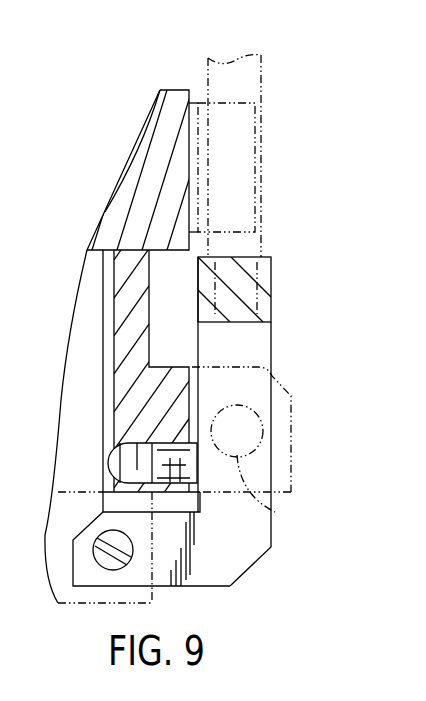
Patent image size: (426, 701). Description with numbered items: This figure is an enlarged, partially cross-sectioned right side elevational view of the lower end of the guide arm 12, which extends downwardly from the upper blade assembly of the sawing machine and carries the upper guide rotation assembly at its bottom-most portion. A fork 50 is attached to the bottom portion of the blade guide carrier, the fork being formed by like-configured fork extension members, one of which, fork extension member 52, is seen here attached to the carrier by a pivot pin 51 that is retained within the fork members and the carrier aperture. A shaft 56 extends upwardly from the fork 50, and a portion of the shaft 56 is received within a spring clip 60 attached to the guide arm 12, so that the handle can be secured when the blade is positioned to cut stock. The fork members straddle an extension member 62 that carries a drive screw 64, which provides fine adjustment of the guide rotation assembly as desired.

The guide arm 12 is at (122, 193).
The fork 50 is at (271, 296).
The pivot pin 51 is at (100, 537).
The fork extension member 52 is at (235, 532).
The shaft 56 is at (262, 86).
The spring clip 60 is at (235, 176).
The extension member 62 is at (293, 428).
The drive screw 64 is at (277, 513).